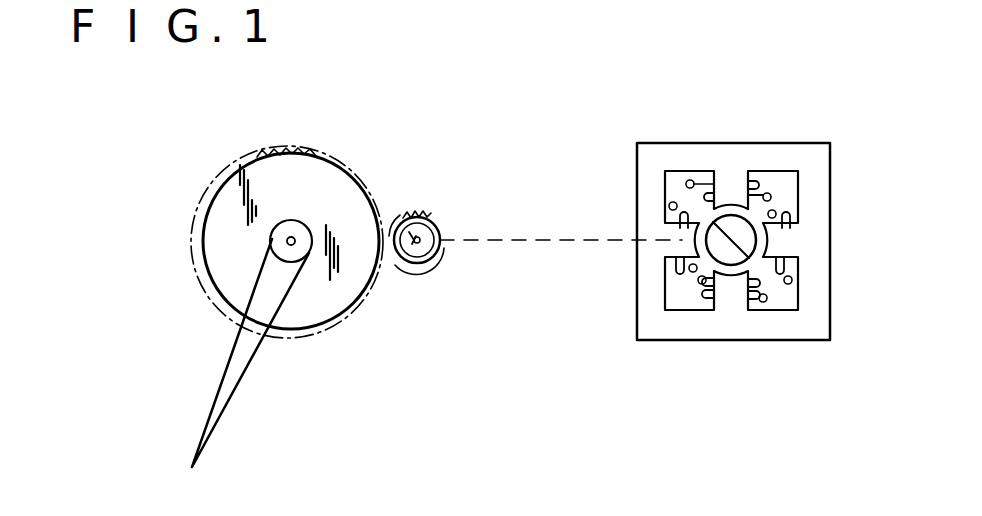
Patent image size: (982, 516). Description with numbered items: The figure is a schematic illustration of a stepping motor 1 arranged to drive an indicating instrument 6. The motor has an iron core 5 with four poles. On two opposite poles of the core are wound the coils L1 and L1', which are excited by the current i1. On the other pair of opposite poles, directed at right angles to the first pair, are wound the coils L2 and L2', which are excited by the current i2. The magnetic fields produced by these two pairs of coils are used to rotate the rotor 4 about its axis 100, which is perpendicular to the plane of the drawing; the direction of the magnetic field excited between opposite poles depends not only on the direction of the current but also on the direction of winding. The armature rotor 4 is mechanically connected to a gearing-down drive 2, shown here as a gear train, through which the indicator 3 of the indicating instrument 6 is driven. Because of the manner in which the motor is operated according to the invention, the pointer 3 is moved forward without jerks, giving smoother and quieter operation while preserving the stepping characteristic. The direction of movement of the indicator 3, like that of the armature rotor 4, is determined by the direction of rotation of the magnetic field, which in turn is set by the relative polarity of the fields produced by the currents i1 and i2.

The stepping motor 1 is at (724, 191).
The drive 2 is at (338, 187).
The indicator 3 is at (240, 362).
The rotor 4 is at (788, 236).
The iron core 5 is at (813, 163).
The indicating instrument 6 is at (232, 150).
The axis 100 is at (514, 238).
The coil L1 is at (728, 176).
The coil L1' is at (740, 295).
The coil L2 is at (624, 242).
The coil L2' is at (826, 237).
The current i1 is at (688, 180).
The current i2 is at (669, 203).